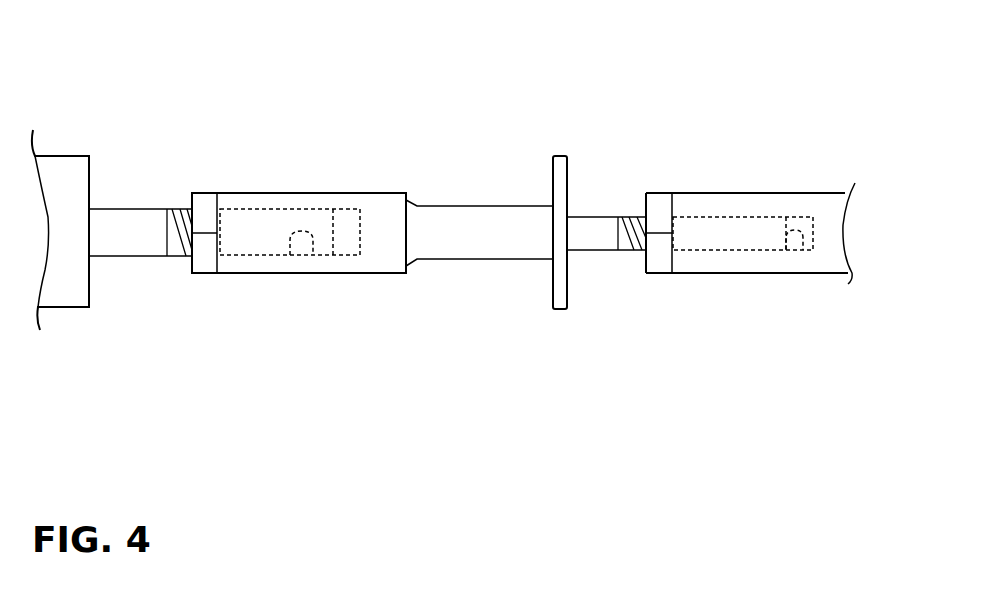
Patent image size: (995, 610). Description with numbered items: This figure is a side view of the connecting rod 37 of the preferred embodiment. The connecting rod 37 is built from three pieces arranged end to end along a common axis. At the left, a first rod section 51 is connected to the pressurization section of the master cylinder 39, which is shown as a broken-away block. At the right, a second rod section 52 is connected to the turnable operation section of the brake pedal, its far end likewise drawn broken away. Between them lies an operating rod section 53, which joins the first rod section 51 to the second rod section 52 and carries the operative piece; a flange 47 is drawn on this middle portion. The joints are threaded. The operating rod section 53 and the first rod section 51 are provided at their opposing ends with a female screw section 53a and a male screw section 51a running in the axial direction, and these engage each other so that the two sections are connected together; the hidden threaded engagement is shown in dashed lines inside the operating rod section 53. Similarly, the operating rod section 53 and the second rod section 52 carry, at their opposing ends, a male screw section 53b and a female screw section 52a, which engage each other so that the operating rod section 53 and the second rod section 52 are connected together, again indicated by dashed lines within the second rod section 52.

The connecting rod 37 is at (831, 284).
The master cylinder 39 is at (72, 156).
The flange 47 is at (553, 178).
The first rod section 51 is at (127, 209).
The male screw section 51a is at (249, 240).
The second rod section 52 is at (817, 193).
The female screw section 52a is at (781, 250).
The operating rod section 53 is at (387, 193).
The female screw section 53a is at (290, 255).
The male screw section 53b is at (740, 250).